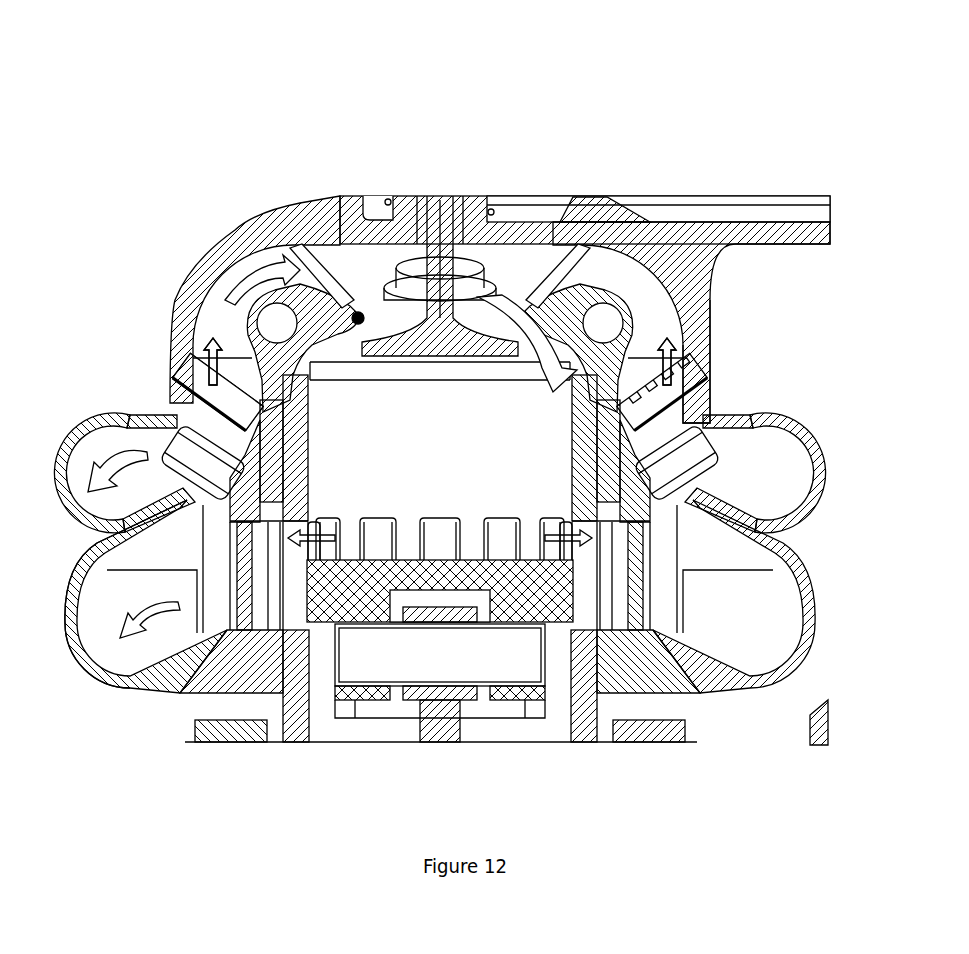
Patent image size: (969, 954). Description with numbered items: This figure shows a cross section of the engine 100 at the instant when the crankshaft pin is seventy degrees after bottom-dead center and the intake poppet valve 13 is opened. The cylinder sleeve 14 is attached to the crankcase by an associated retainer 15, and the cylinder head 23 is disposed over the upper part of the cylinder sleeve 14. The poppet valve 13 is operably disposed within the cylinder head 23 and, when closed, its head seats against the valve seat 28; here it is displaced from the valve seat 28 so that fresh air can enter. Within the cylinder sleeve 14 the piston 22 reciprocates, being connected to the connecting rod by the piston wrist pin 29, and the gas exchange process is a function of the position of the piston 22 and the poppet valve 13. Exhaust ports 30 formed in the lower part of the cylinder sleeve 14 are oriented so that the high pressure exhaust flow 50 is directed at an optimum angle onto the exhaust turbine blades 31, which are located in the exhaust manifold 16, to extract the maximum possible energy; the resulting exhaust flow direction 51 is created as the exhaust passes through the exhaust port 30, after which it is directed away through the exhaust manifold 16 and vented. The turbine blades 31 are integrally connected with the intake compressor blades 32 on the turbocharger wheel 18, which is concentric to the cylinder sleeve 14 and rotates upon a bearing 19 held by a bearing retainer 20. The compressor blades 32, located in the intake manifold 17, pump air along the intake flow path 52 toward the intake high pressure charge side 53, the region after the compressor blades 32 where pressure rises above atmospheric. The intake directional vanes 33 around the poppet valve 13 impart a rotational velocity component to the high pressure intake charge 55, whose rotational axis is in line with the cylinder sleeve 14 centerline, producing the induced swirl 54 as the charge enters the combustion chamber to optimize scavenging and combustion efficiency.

The engine 100 is at (235, 135).
The poppet valve 13 is at (437, 222).
The cylinder sleeve 14 is at (297, 686).
The retainer 15 is at (232, 733).
The exhaust manifold 16 is at (63, 620).
The intake manifold 17 is at (58, 478).
The turbocharger wheel 18 is at (633, 500).
The bearing 19 is at (263, 485).
The bearing retainer 20 is at (278, 428).
The piston 22 is at (540, 598).
The cylinder head 23 is at (693, 317).
The valve seat 28 is at (342, 302).
The piston wrist pin 29 is at (495, 652).
The exhaust port 30 is at (583, 600).
The exhaust turbine blades 31 is at (617, 598).
The intake compressor blades 32 is at (650, 417).
The intake directional vanes 33 is at (623, 277).
The exhaust flow 50 is at (325, 538).
The exhaust flow direction 51 is at (130, 637).
The intake flow path 52 is at (100, 462).
The intake high pressure charge side 53 is at (208, 340).
The induced swirl 54 is at (265, 270).
The high pressure intake charge 55 is at (540, 372).